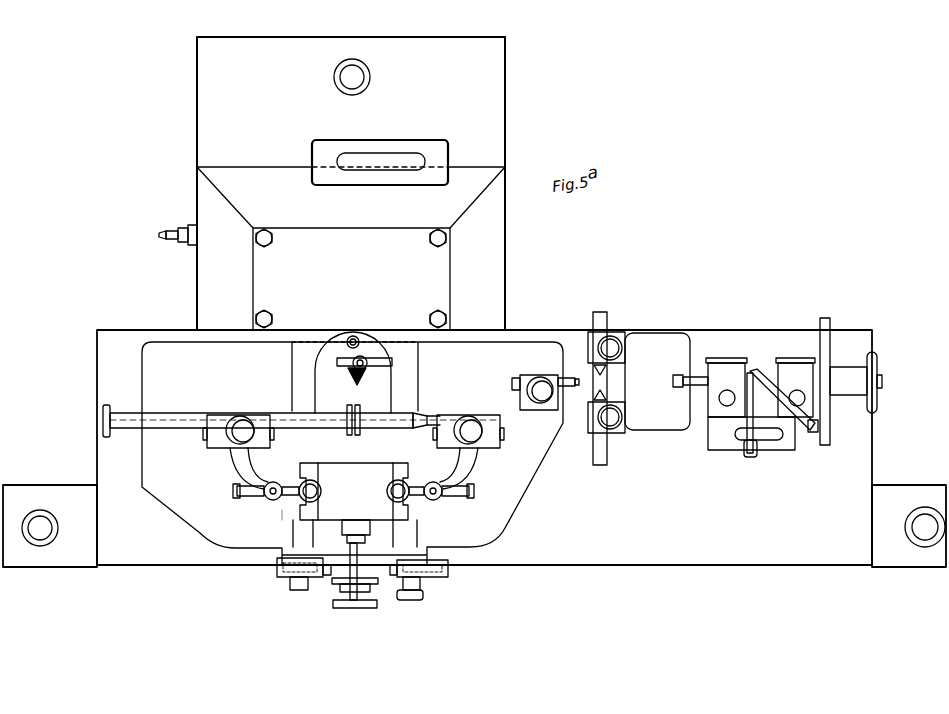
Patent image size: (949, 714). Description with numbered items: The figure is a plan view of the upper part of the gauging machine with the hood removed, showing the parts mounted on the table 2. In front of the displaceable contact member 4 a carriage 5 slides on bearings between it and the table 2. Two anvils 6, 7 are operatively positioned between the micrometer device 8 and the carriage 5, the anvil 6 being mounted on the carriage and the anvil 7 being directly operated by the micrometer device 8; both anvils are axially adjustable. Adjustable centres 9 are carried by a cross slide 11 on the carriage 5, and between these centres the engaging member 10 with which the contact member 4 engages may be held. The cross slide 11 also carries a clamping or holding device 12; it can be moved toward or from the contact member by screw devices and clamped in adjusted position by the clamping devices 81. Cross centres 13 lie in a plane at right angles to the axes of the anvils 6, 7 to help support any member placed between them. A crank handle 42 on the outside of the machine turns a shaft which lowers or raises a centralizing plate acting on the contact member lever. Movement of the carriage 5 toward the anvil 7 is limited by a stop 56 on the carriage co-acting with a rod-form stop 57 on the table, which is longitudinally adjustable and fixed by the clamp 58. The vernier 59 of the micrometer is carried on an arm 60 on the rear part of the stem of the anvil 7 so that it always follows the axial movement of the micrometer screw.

The table 2 is at (474, 448).
The contact member 4 is at (362, 378).
The carriage 5 is at (200, 500).
The anvil 6 is at (517, 380).
The anvil 7 is at (686, 375).
The micrometer device 8 is at (846, 380).
The adjustable centres 9 is at (163, 418).
The engaging member 10 is at (345, 405).
The cross slide 11 is at (288, 510).
The clamping or holding device 12 is at (353, 495).
The cross centres 13 is at (602, 452).
The crank handle 42 is at (168, 243).
The stop 56 is at (323, 577).
The stop 57 is at (387, 567).
The clamp 58 is at (418, 582).
The vernier 59 is at (812, 433).
The arm 60 is at (762, 387).
The clamping devices 81 is at (270, 496).